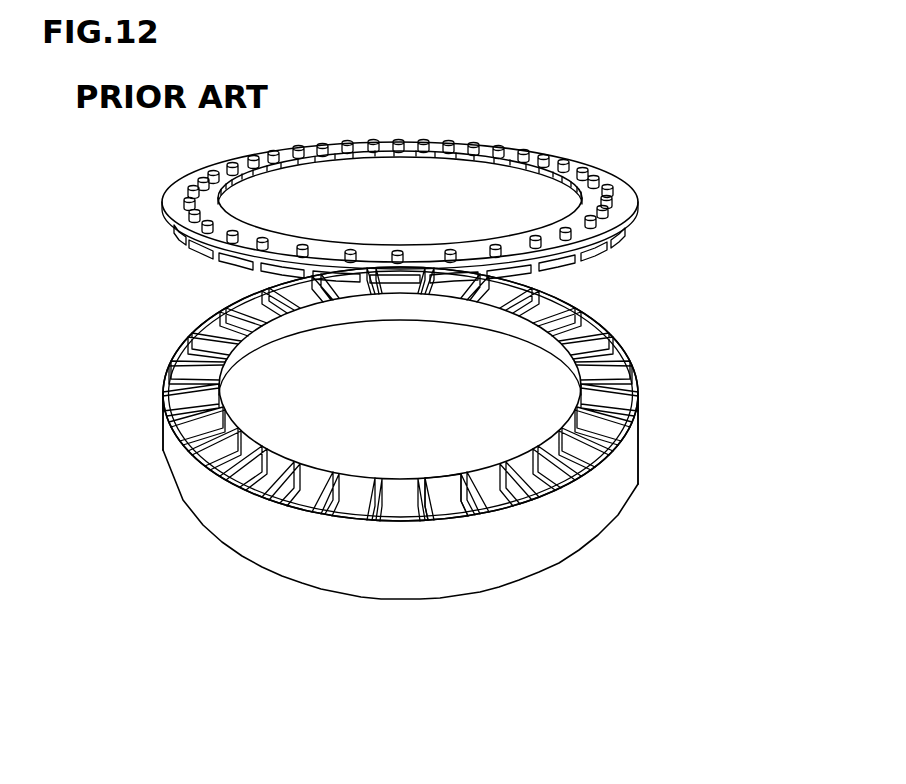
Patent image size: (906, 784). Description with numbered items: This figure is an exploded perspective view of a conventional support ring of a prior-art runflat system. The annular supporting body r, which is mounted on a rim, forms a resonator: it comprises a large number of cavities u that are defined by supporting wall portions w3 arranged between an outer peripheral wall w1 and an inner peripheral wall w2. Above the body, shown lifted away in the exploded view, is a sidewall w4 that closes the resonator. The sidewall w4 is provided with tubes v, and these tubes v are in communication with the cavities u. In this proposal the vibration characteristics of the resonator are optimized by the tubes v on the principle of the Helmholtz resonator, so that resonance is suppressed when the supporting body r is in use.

The tubes v is at (545, 155).
The sidewall w4 is at (623, 200).
The supporting wall portions w3 is at (612, 347).
The inner peripheral wall w2 is at (483, 315).
The outer peripheral wall w1 is at (628, 455).
The cavities u is at (440, 503).
The annular supporting body r is at (592, 559).